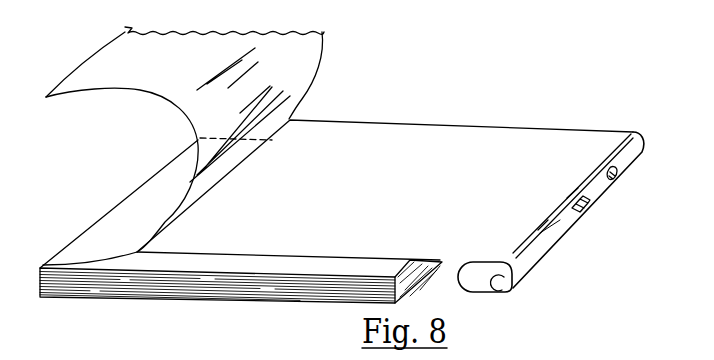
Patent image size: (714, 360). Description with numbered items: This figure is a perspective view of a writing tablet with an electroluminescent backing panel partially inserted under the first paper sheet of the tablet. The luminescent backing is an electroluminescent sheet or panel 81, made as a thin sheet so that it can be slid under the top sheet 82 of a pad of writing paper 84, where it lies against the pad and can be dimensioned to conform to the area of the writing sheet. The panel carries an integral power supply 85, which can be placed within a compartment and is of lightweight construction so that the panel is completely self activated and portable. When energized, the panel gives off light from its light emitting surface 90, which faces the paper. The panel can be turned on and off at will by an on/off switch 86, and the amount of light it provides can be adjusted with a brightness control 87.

The electroluminescent sheet or panel 81 is at (485, 128).
The top sheet 82 is at (323, 62).
The pad of writing paper 84 is at (213, 286).
The integral power supply 85 is at (492, 292).
The on/off switch 86 is at (586, 195).
The brightness control 87 is at (618, 170).
The light emitting surface 90 is at (390, 148).